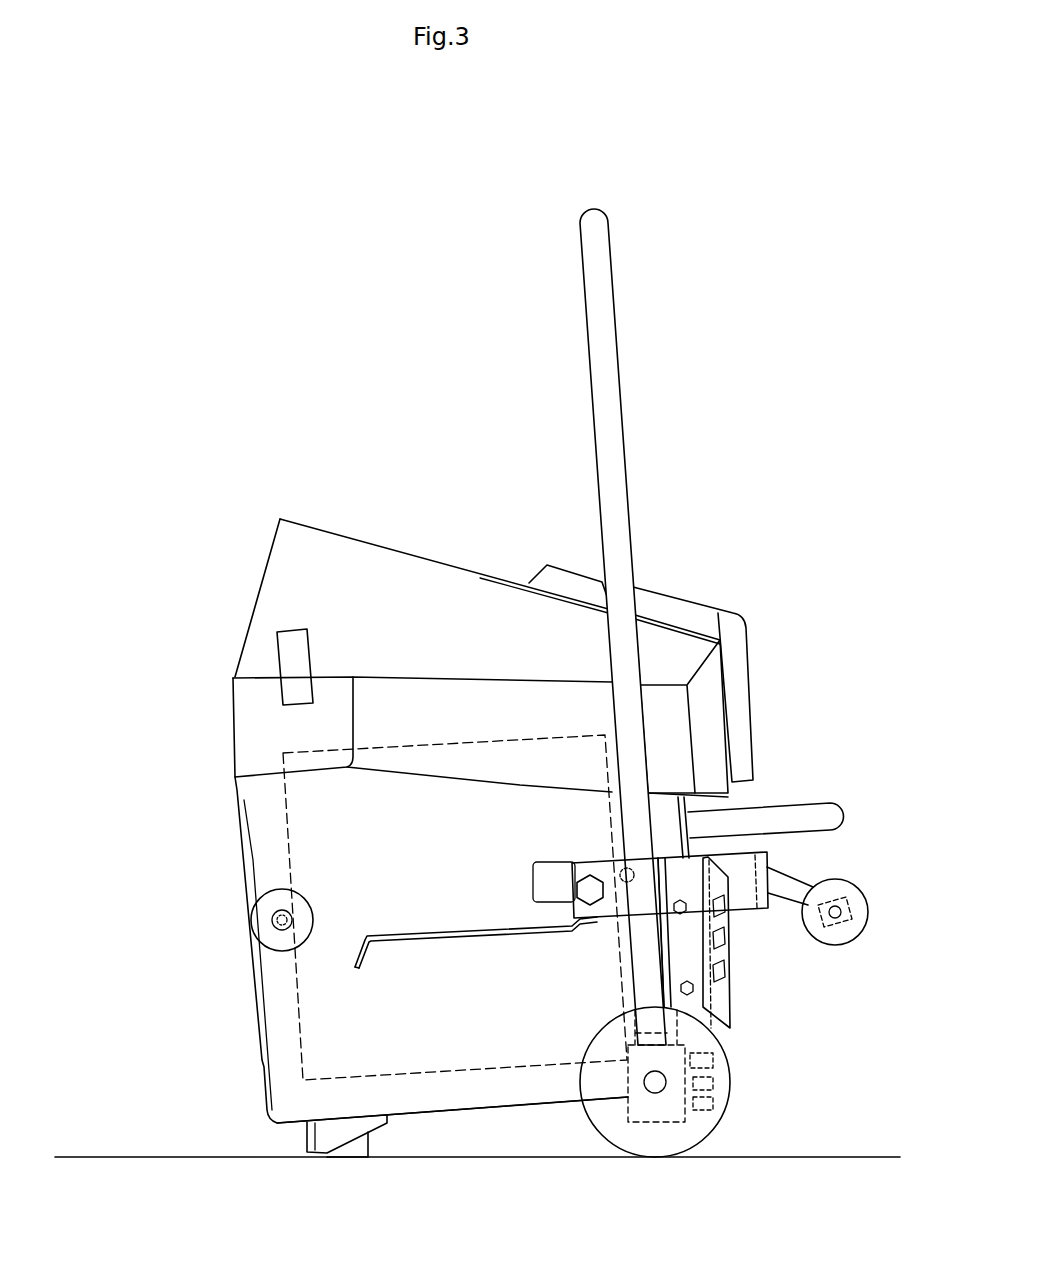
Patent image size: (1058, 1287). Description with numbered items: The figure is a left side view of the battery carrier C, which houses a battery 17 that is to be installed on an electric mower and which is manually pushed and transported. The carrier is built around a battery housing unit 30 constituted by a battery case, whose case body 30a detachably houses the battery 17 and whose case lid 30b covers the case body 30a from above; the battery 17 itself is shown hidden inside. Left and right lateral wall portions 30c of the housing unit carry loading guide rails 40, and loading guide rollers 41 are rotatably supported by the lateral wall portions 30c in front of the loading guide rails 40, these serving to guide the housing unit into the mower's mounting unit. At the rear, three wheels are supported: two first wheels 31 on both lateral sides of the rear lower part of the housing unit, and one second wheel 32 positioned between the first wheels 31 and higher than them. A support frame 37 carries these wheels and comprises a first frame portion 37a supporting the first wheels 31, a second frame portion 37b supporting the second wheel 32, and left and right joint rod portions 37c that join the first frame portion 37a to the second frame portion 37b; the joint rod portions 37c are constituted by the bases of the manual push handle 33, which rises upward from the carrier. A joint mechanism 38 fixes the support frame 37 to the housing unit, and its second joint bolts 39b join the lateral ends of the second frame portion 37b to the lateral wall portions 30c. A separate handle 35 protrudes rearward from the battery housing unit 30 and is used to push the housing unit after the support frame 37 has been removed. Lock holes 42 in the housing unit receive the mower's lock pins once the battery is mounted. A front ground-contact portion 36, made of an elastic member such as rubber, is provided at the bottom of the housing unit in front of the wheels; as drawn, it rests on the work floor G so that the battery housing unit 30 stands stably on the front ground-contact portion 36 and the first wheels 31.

The battery carrier C is at (215, 432).
The battery housing unit 30 is at (442, 803).
The case body 30a is at (282, 995).
The case lid 30b is at (360, 552).
The lateral wall portions 30c is at (500, 1082).
The battery 17 is at (455, 745).
The manual push handle 33 is at (602, 285).
The handle 35 is at (800, 805).
The second wheel 32 is at (850, 893).
The first wheels 31 is at (710, 1115).
The support frame 37 is at (687, 959).
The first frame portion 37a is at (710, 1043).
The second frame portion 37b is at (743, 907).
The joint rod portions 37c is at (643, 970).
The lock holes 42 is at (620, 870).
The second joint bolts 39b is at (577, 890).
The joint mechanism 38 is at (507, 898).
The loading guide rails 40 is at (432, 938).
The loading guide rollers 41 is at (265, 922).
The front ground-contact portion 36 is at (370, 1143).
The work floor G is at (150, 1155).